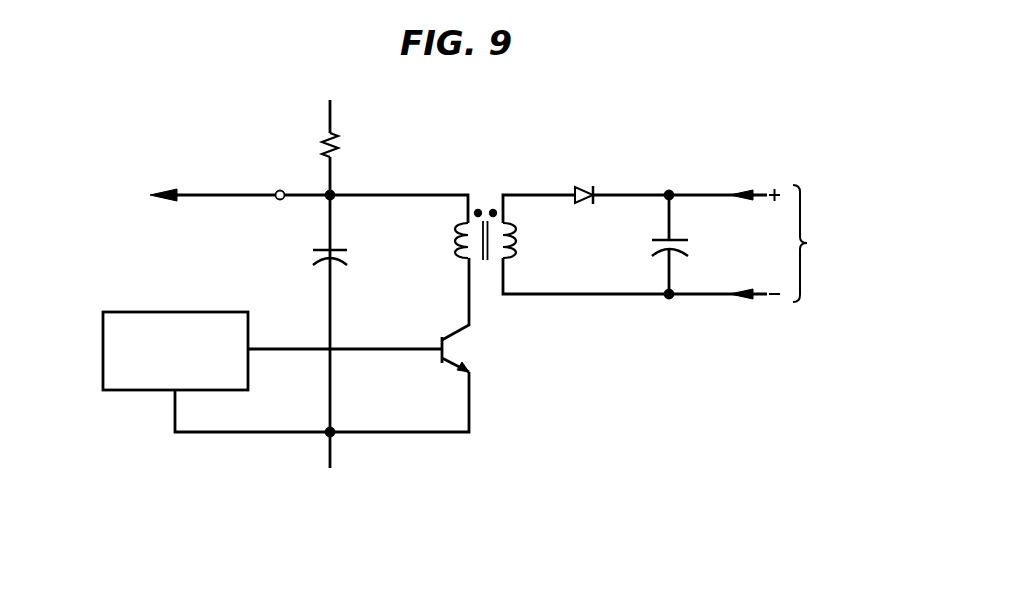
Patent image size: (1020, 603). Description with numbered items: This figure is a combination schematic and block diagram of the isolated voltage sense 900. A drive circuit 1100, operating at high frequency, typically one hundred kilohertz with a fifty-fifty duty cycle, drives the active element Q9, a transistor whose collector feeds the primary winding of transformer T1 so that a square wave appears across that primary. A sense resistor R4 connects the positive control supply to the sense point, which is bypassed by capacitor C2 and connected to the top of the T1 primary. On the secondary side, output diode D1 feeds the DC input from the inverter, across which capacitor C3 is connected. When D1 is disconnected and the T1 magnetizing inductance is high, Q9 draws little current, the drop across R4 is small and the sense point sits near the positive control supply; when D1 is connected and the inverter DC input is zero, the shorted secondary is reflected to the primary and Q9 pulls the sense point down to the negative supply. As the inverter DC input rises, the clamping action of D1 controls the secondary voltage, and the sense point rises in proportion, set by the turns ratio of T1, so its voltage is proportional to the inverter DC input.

The isolated voltage sense 900 is at (102, 522).
The drive circuit 1100 is at (177, 312).
The sense resistor R4 is at (345, 144).
The capacitor C2 is at (315, 255).
The capacitor C3 is at (656, 244).
The output diode D1 is at (586, 177).
The transformer T1 is at (487, 231).
The active element Q9 is at (466, 315).